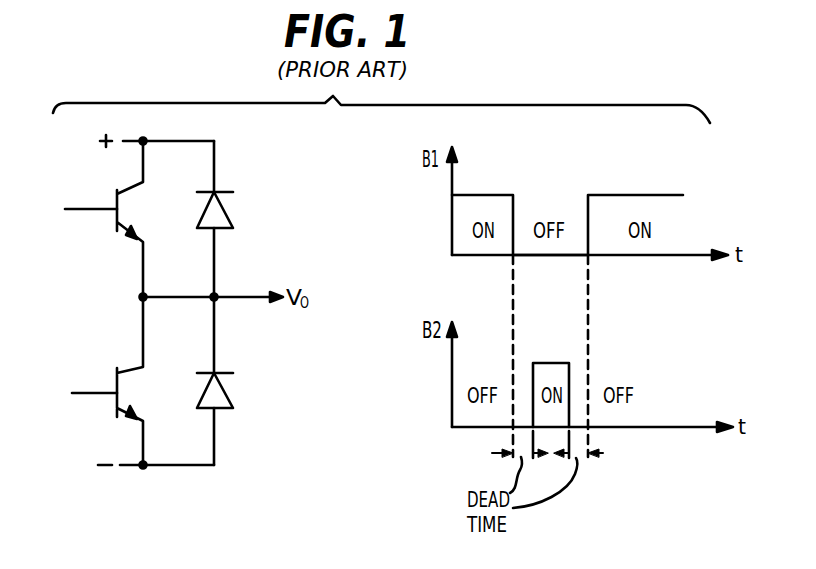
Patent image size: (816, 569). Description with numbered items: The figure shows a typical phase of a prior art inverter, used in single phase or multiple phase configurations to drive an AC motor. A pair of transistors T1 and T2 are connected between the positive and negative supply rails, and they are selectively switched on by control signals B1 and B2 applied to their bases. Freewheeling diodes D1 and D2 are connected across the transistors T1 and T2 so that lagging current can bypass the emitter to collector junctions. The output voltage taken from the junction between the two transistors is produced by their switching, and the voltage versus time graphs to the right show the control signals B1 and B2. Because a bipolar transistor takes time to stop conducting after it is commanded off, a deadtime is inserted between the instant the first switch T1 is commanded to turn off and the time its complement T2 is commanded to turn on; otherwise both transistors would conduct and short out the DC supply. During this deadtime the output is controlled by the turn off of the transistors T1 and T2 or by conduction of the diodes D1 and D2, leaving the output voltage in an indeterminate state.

The transistor T1 is at (135, 219).
The transistor T2 is at (133, 381).
The freewheeling diode D1 is at (229, 210).
The freewheeling diode D2 is at (230, 390).
The control signal B1 is at (77, 209).
The control signal B2 is at (79, 394).